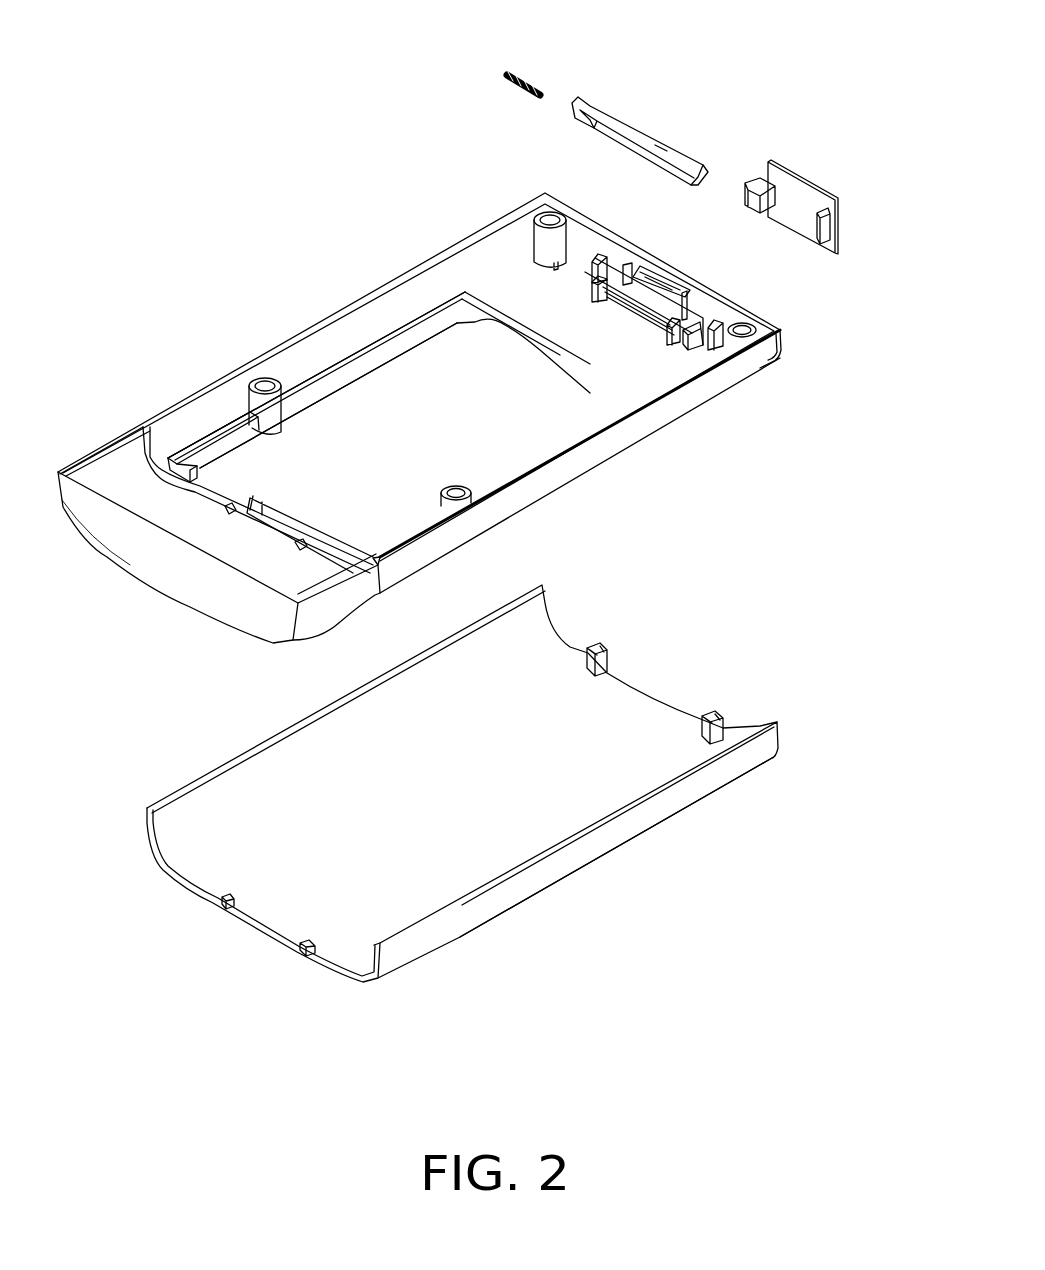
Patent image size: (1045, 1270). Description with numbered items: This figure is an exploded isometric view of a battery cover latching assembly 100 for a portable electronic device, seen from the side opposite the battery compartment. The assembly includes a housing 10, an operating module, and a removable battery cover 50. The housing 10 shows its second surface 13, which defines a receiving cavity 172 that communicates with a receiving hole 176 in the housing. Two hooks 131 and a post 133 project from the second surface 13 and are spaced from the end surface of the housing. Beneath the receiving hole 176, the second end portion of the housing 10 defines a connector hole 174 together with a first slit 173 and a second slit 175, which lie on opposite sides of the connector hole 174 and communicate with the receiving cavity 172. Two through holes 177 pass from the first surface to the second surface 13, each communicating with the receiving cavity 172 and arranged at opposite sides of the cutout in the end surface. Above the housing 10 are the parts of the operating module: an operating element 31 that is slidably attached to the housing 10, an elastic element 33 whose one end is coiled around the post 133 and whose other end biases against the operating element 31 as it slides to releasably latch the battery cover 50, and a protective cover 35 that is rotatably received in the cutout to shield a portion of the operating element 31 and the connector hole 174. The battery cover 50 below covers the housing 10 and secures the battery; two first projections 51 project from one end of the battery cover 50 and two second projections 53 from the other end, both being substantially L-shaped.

The battery cover latching assembly 100 is at (288, 66).
The housing 10 is at (361, 303).
The second surface 13 is at (565, 288).
The hooks 131 is at (596, 300).
The post 133 is at (572, 325).
The receiving cavity 172 is at (693, 338).
The first slit 173 is at (627, 263).
The connector hole 174 is at (653, 277).
The second slit 175 is at (685, 280).
The receiving hole 176 is at (653, 323).
The through holes 177 is at (603, 267).
The operating element 31 is at (633, 128).
The elastic element 33 is at (528, 73).
The protective cover 35 is at (792, 167).
The battery cover 50 is at (545, 868).
The first projections 51 is at (302, 955).
The second projections 53 is at (718, 718).